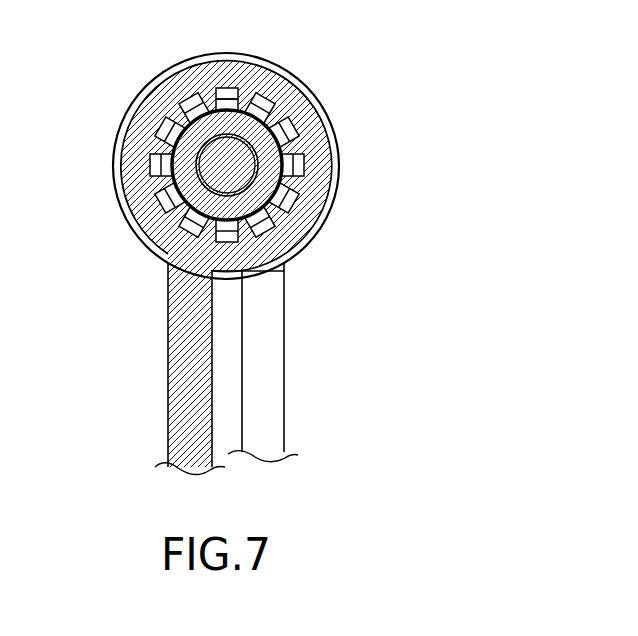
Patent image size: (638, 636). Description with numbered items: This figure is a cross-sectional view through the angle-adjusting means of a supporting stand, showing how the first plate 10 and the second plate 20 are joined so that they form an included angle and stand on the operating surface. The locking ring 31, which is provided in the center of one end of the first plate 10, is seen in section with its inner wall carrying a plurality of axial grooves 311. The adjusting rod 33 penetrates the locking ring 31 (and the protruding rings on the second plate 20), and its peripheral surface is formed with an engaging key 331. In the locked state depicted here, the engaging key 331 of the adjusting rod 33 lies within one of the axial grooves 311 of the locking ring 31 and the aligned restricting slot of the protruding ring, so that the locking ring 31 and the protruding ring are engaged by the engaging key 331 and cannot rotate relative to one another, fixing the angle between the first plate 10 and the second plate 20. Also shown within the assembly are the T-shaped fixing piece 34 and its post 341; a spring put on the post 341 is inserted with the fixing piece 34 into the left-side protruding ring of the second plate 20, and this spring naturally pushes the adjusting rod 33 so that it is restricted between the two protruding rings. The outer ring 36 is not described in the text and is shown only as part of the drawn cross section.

The first plate 10 is at (187, 388).
The second plate 20 is at (275, 373).
The locking ring 31 is at (160, 103).
The axial grooves 311 is at (216, 89).
The adjusting rod 33 is at (250, 127).
The engaging key 331 is at (227, 90).
The T-shaped fixing piece 34 is at (193, 155).
The post 341 is at (220, 166).
The outer casing ring 36 is at (308, 92).